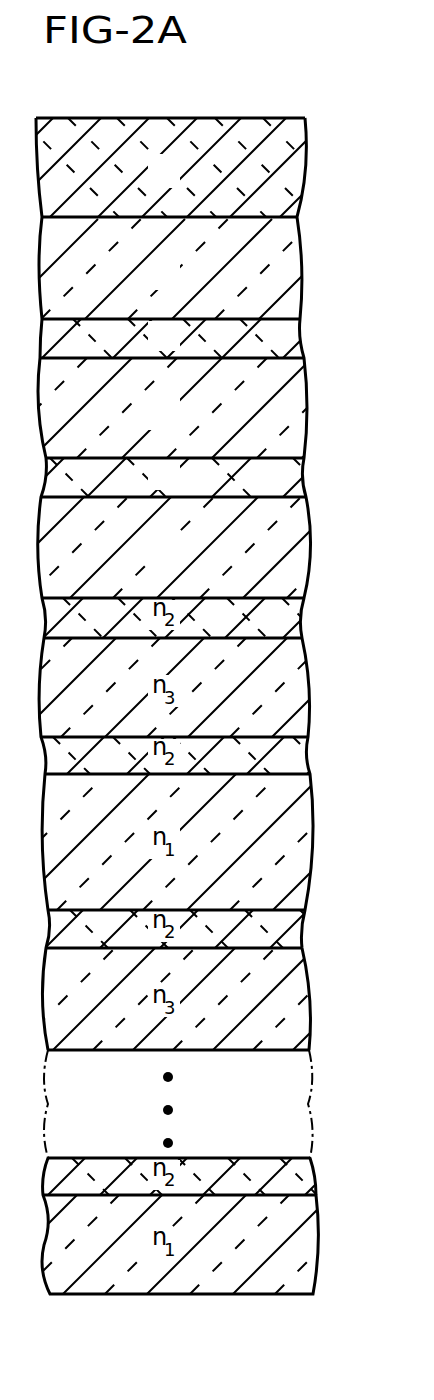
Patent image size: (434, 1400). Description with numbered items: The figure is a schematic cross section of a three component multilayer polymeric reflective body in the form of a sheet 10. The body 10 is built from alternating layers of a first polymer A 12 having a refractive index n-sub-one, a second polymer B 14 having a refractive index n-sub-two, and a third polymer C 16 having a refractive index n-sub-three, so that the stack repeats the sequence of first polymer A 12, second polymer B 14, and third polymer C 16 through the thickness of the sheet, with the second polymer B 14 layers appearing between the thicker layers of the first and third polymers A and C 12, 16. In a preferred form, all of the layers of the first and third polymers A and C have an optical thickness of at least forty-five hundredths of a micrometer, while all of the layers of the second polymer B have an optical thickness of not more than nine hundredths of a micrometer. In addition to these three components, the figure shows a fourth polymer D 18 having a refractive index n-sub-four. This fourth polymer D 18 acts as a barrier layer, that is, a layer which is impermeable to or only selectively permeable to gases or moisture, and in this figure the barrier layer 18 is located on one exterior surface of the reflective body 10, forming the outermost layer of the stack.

The multilayer reflective polymer body 10 is at (233, 98).
The first polymer layer 12 is at (290, 560).
The second polymer layer 14 is at (290, 486).
The third polymer layer 16 is at (283, 393).
The fourth polymer barrier layer 18 is at (297, 212).
The first polymer A is at (294, 269).
The second polymer B is at (283, 340).
The third polymer C is at (285, 437).
The fourth polymer D is at (293, 164).